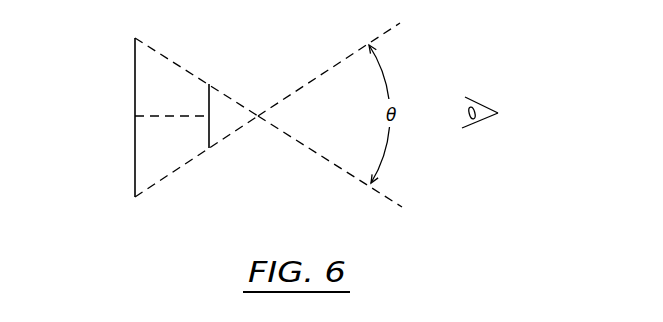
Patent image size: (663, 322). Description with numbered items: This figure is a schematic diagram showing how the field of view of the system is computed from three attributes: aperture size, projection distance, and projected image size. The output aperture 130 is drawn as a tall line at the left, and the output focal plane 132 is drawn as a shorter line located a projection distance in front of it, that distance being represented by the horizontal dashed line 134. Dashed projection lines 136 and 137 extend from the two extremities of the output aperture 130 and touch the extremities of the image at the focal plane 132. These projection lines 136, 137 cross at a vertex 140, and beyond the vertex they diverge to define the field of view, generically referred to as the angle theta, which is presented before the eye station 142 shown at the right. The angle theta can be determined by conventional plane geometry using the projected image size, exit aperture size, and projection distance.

The output aperture 130 is at (135, 168).
The output focal plane 132 is at (210, 130).
The dashed line 134 is at (158, 114).
The dashed projection line 136 is at (172, 62).
The dashed projection line 137 is at (170, 172).
The vertex 140 is at (258, 112).
The eye station 142 is at (478, 102).